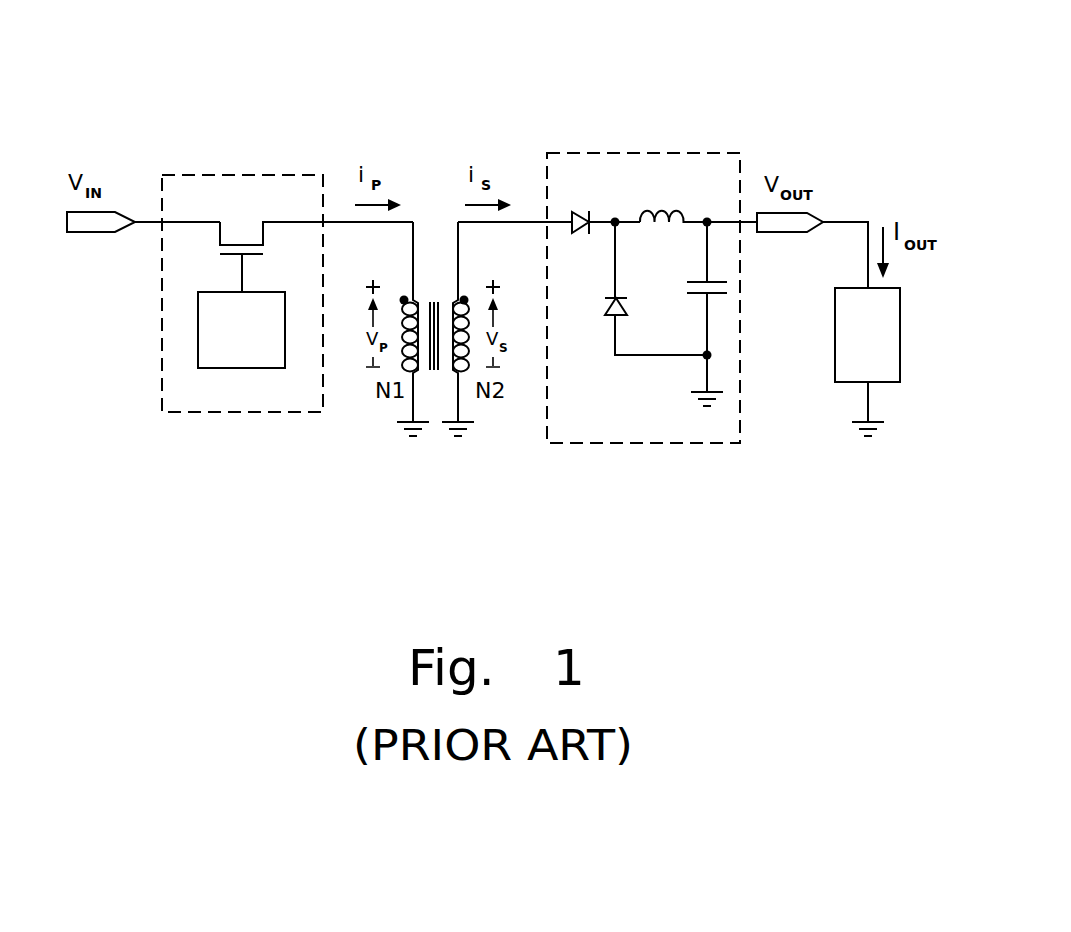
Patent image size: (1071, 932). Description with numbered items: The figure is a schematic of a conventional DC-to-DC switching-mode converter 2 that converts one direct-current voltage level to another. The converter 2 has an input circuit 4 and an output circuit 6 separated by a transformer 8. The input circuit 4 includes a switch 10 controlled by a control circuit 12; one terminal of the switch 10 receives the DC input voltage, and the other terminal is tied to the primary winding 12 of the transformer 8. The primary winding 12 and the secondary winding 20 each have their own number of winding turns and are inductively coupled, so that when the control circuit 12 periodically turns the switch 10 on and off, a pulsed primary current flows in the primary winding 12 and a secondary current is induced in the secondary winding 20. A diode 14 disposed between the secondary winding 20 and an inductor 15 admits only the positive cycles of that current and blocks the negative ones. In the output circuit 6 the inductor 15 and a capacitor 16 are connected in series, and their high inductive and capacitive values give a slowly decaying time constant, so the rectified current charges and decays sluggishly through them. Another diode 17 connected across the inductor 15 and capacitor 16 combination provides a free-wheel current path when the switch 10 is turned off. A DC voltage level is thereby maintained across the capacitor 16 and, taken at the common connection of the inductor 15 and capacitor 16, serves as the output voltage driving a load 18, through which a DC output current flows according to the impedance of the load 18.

The DC-to-DC switching-mode converter 2 is at (797, 92).
The input circuit 4 is at (232, 164).
The output circuit 6 is at (645, 140).
The transformer 8 is at (437, 266).
The switch 10 is at (262, 231).
The control circuit / primary winding 12 is at (257, 345).
The diode 14 is at (578, 237).
The inductor 15 is at (675, 215).
The capacitor 16 is at (697, 293).
The diode 17 is at (603, 306).
The load 18 is at (883, 349).
The secondary winding 20 is at (468, 310).